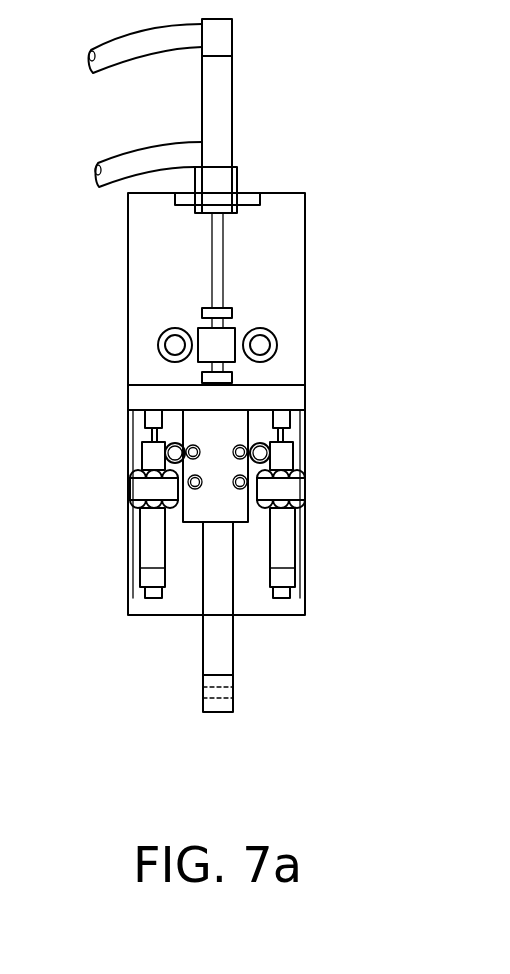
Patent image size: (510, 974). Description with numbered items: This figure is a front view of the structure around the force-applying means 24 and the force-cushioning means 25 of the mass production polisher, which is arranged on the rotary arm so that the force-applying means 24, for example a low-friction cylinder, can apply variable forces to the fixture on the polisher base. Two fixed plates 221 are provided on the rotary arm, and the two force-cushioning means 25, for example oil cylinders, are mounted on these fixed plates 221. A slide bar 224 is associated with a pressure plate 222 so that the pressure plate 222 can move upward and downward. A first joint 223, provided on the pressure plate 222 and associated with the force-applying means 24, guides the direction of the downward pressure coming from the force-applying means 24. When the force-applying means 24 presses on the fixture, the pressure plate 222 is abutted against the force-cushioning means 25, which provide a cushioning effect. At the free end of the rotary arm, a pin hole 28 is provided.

The force-applying means 24 is at (180, 175).
The first joint 223 is at (225, 340).
The pressure plate 222 is at (297, 398).
The slide bar 224 is at (220, 605).
The pin hole 28 is at (227, 690).
The force-cushioning means 25 is at (138, 452).
The fixed plates 221 is at (138, 490).